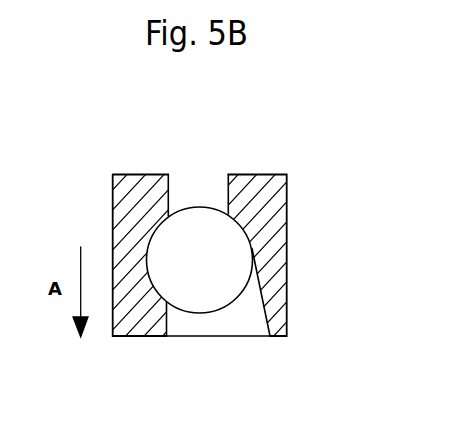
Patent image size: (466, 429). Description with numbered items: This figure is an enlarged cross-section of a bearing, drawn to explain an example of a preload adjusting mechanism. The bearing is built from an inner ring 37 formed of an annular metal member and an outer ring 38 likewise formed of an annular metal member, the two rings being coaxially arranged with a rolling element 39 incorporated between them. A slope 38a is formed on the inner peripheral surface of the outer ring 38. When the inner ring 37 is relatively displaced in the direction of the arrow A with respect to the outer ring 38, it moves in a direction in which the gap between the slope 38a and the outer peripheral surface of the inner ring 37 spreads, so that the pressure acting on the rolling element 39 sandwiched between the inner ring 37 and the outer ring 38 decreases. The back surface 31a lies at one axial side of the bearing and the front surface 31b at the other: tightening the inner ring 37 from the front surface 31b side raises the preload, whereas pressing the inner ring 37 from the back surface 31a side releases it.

The inner ring 37 is at (112, 214).
The outer ring 38 is at (287, 238).
The slope 38a is at (262, 310).
The rolling element 39 is at (165, 214).
The back surface 31a is at (192, 174).
The front surface 31b is at (178, 336).